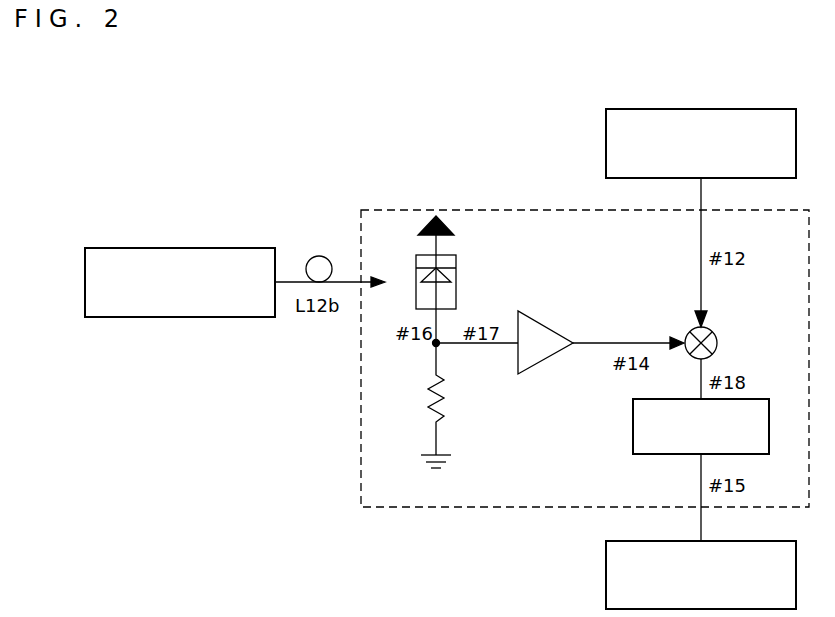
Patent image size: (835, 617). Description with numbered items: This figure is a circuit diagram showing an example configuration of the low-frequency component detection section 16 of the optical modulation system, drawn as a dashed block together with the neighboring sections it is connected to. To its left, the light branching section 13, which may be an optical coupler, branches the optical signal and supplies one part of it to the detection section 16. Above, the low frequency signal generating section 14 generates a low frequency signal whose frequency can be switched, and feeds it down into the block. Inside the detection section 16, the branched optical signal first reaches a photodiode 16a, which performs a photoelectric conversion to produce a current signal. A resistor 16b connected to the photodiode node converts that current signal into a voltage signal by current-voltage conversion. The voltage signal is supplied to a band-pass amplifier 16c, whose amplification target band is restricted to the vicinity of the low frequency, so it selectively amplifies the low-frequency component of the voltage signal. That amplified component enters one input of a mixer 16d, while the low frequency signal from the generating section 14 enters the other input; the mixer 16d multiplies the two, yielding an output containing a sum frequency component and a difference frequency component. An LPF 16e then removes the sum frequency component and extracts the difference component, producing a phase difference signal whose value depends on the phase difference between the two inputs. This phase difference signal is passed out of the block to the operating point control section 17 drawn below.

The light branching section 13 is at (225, 248).
The low frequency signal generating section 14 is at (745, 109).
The low-frequency component detection section 16 is at (760, 209).
The photodiode 16a is at (457, 273).
The resistor 16b is at (444, 405).
The band-pass amplifier 16c is at (540, 321).
The mixer 16d is at (718, 343).
The LPF 16e is at (632, 428).
The operating point control section 17 is at (745, 541).